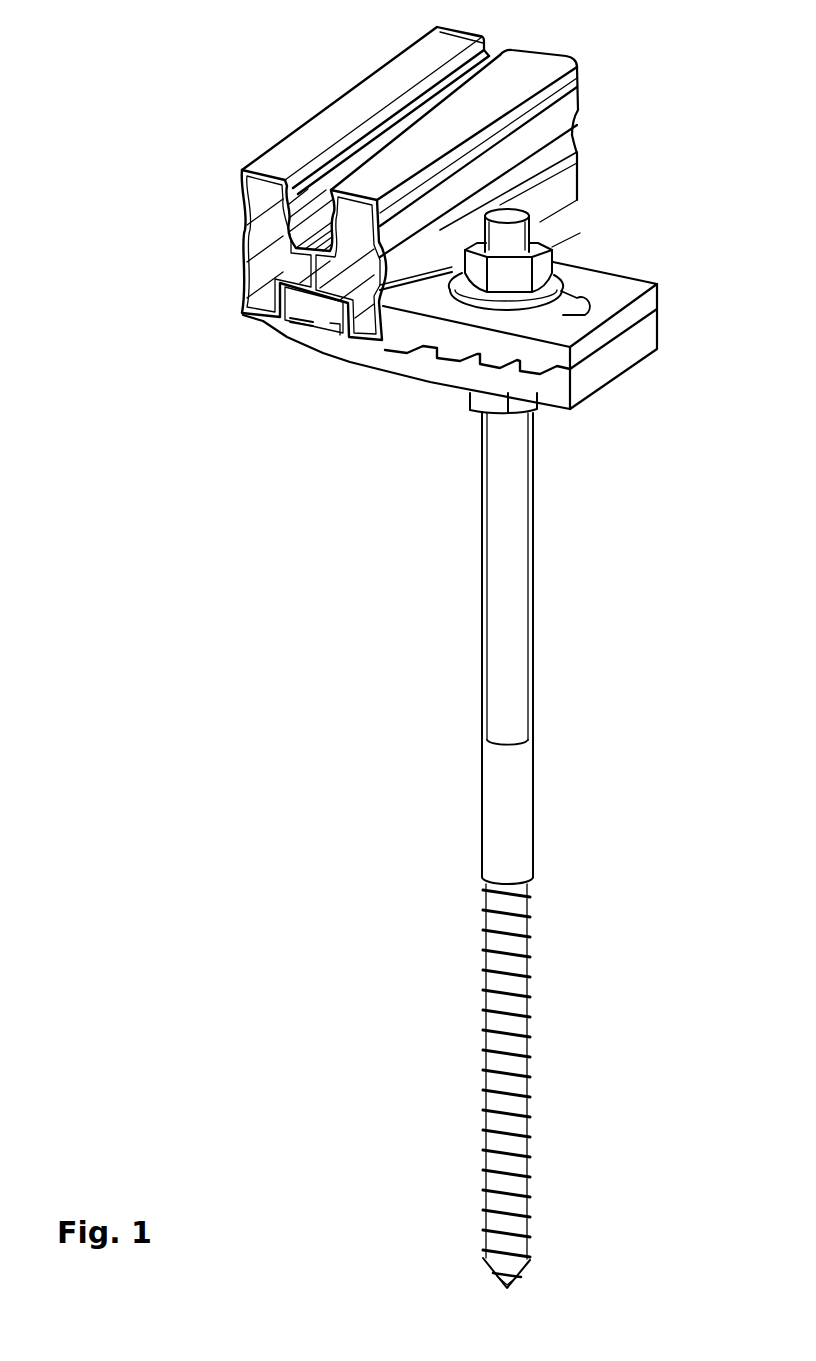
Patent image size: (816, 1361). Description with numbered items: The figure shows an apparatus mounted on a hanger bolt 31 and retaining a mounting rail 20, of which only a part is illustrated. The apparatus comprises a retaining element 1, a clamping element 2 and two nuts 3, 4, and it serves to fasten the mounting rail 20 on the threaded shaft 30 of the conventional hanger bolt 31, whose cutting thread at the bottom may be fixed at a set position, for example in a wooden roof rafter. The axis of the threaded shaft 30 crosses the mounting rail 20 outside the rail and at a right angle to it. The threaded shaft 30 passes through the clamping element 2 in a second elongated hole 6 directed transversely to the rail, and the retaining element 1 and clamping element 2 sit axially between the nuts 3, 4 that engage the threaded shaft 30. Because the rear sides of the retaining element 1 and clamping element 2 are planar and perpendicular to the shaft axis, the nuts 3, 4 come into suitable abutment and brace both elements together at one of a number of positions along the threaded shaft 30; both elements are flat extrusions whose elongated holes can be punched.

The mounting rail 20 is at (309, 79).
The clamping element 2 is at (641, 277).
The retaining element 1 is at (617, 376).
The second elongated hole 6 is at (592, 298).
The nut 4 is at (553, 257).
The nut 3 is at (475, 413).
The threaded shaft 30 is at (534, 583).
The hanger bolt 31 is at (586, 797).